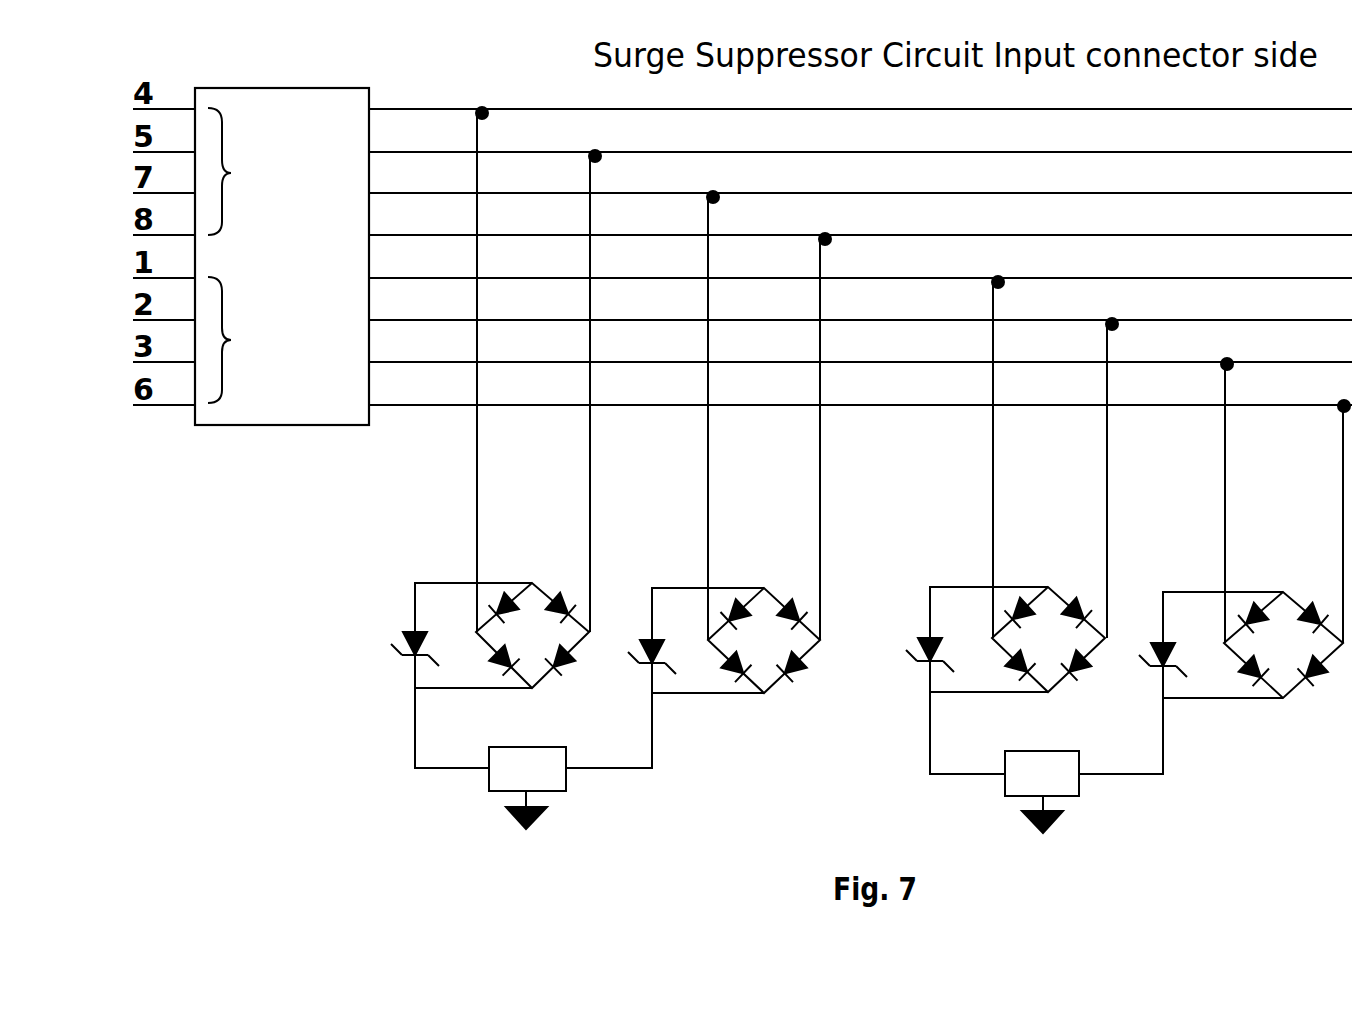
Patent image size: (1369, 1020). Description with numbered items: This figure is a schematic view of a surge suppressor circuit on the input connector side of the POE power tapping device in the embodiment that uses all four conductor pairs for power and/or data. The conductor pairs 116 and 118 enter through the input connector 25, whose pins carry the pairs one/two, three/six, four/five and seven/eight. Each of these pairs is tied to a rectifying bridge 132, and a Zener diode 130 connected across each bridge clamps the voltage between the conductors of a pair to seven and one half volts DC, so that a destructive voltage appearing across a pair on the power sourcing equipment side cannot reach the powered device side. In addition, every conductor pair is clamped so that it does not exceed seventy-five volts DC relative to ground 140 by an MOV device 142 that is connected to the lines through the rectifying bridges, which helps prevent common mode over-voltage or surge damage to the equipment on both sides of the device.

The input connector 25 is at (282, 256).
The conductor pairs 116 is at (265, 145).
The conductor pairs 118 is at (263, 368).
The Zener diode 130 is at (765, 665).
The rectifying bridge 132 is at (909, 640).
The ground 140 is at (770, 826).
The MOV device 142 is at (784, 772).